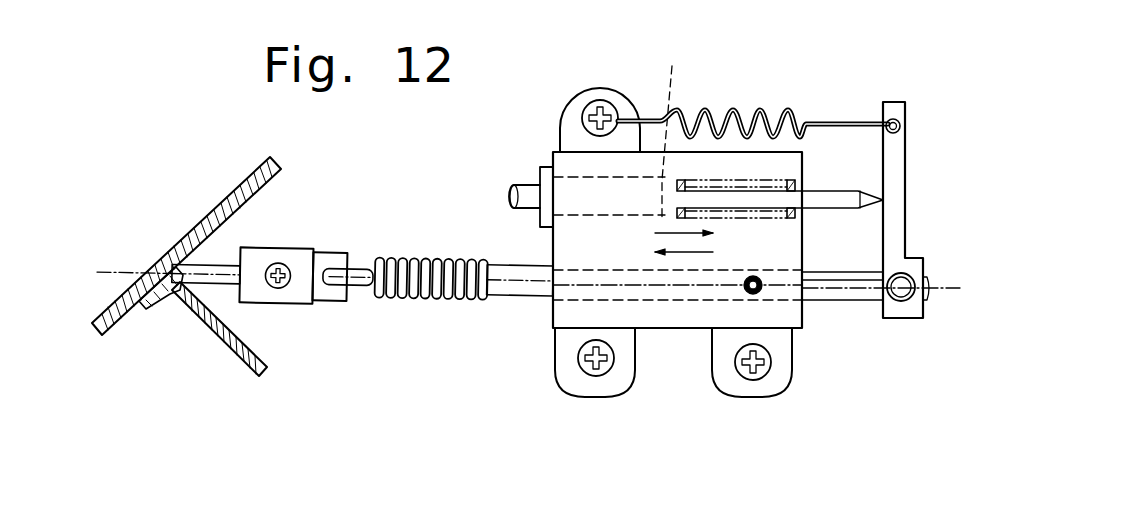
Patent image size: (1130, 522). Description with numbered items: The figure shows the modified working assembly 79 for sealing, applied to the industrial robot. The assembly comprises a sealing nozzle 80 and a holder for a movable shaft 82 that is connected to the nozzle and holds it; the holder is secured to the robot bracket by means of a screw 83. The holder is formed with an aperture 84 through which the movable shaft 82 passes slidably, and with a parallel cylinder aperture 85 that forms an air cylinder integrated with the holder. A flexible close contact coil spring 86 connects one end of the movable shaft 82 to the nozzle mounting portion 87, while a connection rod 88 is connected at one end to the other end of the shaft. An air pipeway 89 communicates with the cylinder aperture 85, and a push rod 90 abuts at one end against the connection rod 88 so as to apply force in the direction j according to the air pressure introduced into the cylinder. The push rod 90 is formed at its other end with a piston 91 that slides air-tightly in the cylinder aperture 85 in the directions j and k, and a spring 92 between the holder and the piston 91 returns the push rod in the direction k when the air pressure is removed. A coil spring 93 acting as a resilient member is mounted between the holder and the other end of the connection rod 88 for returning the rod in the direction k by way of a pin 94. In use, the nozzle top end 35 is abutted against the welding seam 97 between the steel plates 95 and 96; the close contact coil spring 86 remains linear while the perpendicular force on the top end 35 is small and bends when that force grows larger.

The nozzle top end 35 is at (181, 230).
The working assembly 79 is at (922, 357).
The sealing nozzle 80 is at (227, 263).
The movable shaft 82 is at (510, 297).
The screw 83 is at (604, 103).
The aperture 84 is at (560, 292).
The cylinder aperture 85 is at (537, 208).
The close contact coil spring 86 is at (402, 298).
The nozzle mounting portion 87 is at (297, 248).
The connection rod 88 is at (892, 318).
The air pipeway 89 is at (510, 192).
The push rod 90 is at (876, 196).
The piston 91 is at (673, 128).
The spring 92 is at (785, 178).
The coil spring 93 is at (712, 118).
The pin 94 is at (900, 122).
The steel plate 95 is at (257, 173).
The steel plate 96 is at (207, 318).
The welding seam 97 is at (162, 262).